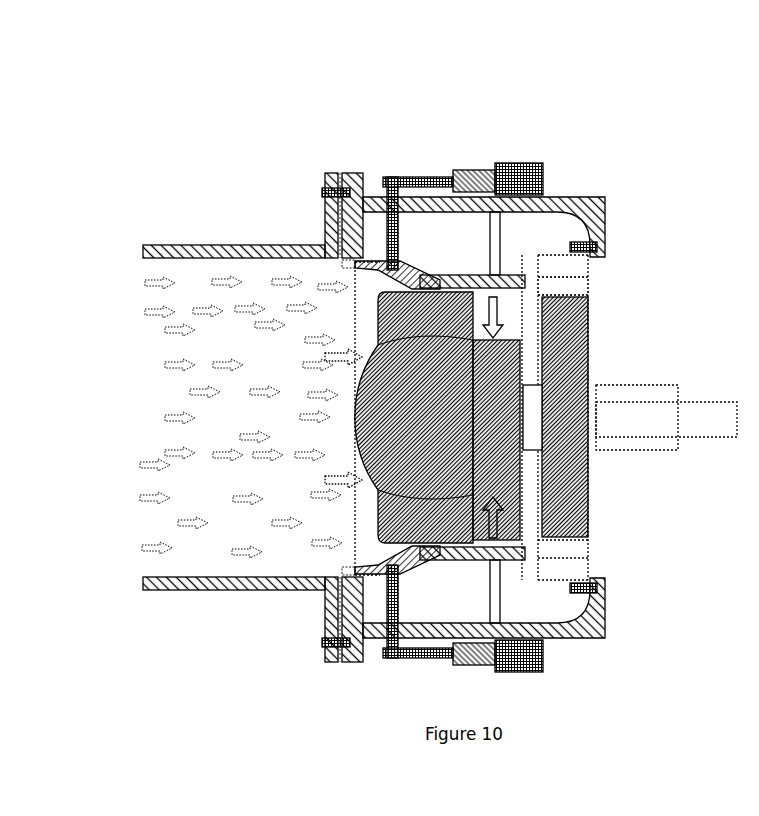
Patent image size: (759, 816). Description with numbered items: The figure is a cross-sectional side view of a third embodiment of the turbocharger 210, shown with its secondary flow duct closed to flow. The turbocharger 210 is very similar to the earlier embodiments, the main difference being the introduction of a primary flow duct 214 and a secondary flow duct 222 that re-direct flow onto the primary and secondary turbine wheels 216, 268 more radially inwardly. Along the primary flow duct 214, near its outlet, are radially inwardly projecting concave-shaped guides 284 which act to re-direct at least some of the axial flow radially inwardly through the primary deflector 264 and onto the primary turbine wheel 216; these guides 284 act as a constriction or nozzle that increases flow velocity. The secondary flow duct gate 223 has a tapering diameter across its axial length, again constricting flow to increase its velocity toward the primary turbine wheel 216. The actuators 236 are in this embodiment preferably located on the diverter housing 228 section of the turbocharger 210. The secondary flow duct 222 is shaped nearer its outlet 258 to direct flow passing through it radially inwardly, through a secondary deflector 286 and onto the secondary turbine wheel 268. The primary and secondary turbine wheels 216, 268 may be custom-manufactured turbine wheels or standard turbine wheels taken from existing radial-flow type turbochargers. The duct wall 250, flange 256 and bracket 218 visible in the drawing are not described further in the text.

The turbocharger 210 is at (305, 125).
The primary flow duct 214 is at (168, 397).
The primary turbine wheel 216 is at (588, 517).
The inner shroud bracket 218 is at (430, 275).
The secondary flow duct 222 is at (432, 227).
The secondary flow duct gate 223 is at (368, 645).
The diverter housing 228 is at (423, 640).
The actuators 236 is at (470, 665).
The duct 250 is at (327, 588).
The flange 256 is at (325, 222).
The outlet 258 is at (533, 283).
The primary deflector 264 is at (503, 527).
The secondary turbine wheel 268 is at (588, 348).
The guides 284 is at (530, 293).
The secondary deflector 286 is at (578, 288).